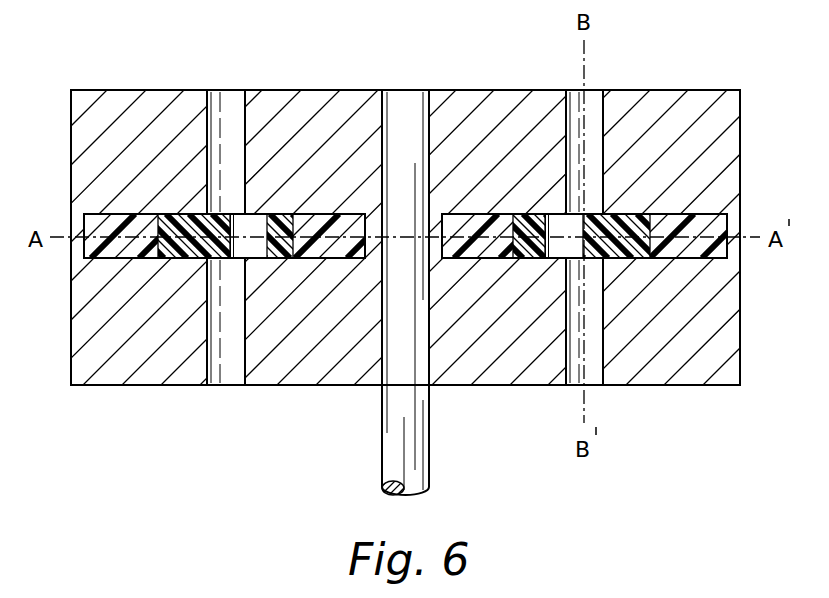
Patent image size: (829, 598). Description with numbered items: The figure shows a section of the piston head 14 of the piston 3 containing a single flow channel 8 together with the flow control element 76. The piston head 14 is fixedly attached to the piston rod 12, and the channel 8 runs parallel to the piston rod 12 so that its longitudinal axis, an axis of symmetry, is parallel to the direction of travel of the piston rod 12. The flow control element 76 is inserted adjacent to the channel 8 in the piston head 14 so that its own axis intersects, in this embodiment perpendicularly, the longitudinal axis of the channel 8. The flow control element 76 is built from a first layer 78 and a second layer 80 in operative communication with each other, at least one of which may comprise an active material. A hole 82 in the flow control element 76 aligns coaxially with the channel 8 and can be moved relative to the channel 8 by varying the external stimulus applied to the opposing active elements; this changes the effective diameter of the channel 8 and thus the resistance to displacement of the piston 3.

The piston head 14 is at (126, 98).
The flow control element 76 is at (284, 206).
The first layer 78 is at (180, 260).
The second layer 80 is at (122, 218).
The hole 82 is at (253, 248).
The channel 8 is at (590, 340).
The piston rod 12 is at (430, 443).
The piston 3 is at (382, 467).